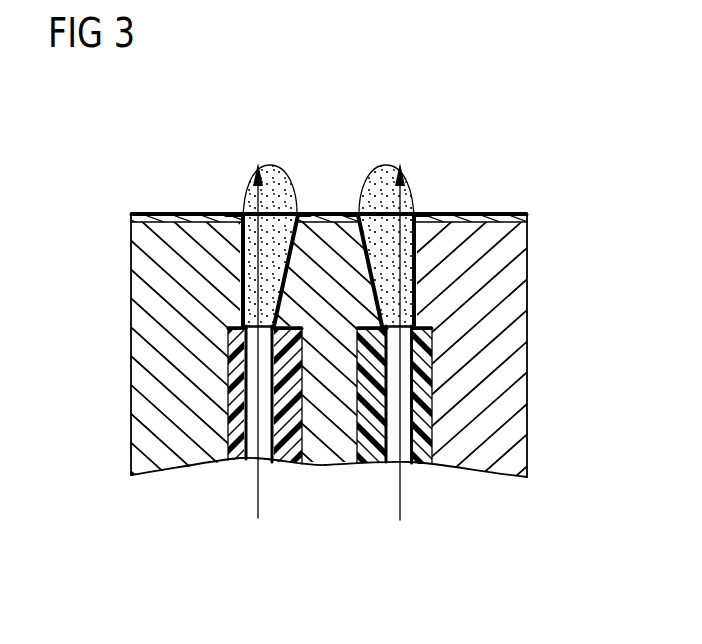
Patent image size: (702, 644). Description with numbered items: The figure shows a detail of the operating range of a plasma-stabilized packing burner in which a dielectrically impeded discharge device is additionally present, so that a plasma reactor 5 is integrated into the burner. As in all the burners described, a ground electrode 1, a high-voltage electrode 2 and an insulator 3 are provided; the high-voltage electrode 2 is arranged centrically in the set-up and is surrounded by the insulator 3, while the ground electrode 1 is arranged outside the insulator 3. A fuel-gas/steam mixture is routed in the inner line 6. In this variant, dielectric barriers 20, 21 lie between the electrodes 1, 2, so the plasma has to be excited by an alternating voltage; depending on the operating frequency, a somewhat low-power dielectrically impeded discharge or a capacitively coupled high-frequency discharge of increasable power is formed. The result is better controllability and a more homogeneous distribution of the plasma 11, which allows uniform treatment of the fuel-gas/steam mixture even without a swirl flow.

The ground electrode 1 is at (478, 436).
The high-voltage electrode 2 is at (330, 464).
The insulator 3 is at (424, 432).
The plasma reactor 5 is at (363, 48).
The inner line 6 is at (258, 478).
The plasma zone 11 is at (430, 255).
The dielectric barrier 20 is at (378, 223).
The dielectric barrier 21 is at (415, 225).